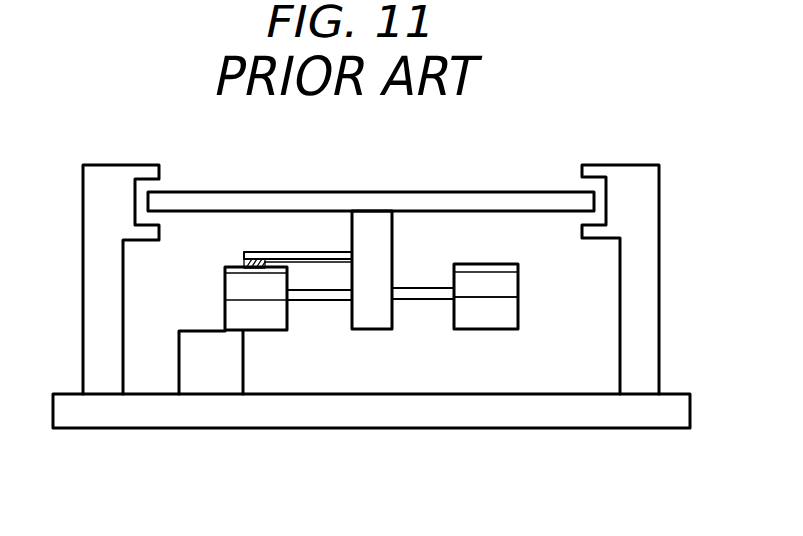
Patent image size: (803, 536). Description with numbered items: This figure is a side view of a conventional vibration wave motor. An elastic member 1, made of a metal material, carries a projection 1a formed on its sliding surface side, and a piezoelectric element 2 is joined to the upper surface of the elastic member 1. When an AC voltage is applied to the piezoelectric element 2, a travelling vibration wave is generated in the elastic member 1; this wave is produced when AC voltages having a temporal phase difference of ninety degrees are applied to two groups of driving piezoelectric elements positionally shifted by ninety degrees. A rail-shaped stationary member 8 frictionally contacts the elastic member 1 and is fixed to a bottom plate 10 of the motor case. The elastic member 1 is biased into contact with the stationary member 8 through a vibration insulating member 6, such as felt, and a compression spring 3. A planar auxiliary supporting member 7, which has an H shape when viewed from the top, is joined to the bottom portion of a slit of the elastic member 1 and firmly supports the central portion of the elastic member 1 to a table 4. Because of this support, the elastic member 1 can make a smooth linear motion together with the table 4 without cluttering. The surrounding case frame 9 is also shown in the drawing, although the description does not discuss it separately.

The elastic member 1 is at (513, 283).
The projection 1a is at (497, 318).
The piezoelectric element 2 is at (487, 268).
The compression spring 3 is at (302, 253).
The table 4 is at (397, 198).
The vibration insulating member 6 is at (245, 263).
The auxiliary supporting member 7 is at (330, 297).
The stationary member 8 is at (228, 378).
The frame 9 is at (650, 193).
The bottom plate 10 is at (652, 420).